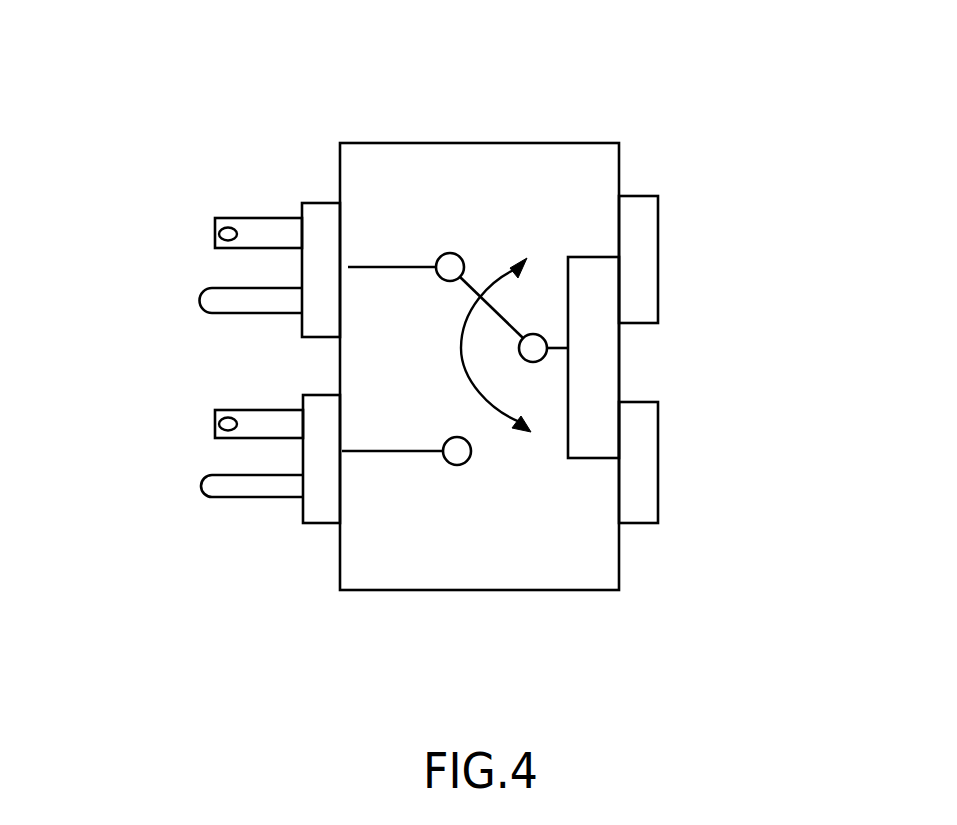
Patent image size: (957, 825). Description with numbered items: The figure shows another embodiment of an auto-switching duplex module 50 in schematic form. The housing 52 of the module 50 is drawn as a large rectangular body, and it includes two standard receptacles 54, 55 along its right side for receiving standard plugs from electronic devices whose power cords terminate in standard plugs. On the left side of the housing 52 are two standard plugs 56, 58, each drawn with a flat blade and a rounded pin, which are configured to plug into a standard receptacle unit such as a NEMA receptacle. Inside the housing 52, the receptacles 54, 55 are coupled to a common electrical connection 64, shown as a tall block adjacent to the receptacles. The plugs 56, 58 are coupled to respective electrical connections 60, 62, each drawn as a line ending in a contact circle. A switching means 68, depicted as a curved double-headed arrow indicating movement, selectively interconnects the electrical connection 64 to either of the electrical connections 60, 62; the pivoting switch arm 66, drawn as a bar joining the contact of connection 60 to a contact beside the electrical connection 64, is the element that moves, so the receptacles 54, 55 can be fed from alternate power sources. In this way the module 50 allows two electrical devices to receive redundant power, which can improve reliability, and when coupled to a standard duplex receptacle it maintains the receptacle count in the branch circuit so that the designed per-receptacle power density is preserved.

The auto-switching duplex module 50 is at (683, 109).
The housing 52 is at (504, 143).
The standard receptacle 54 is at (658, 218).
The standard receptacle 55 is at (658, 442).
The standard plug 56 is at (199, 266).
The standard plug 58 is at (214, 455).
The electrical connection 60 is at (408, 267).
The electrical connection 62 is at (383, 453).
The electrical connection 64 is at (587, 460).
The switch arm 66 is at (519, 326).
The switching means 68 is at (460, 350).